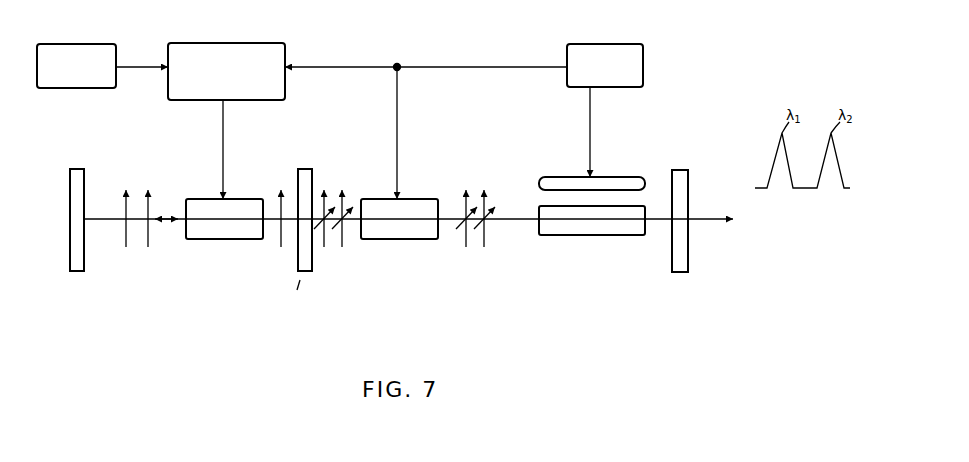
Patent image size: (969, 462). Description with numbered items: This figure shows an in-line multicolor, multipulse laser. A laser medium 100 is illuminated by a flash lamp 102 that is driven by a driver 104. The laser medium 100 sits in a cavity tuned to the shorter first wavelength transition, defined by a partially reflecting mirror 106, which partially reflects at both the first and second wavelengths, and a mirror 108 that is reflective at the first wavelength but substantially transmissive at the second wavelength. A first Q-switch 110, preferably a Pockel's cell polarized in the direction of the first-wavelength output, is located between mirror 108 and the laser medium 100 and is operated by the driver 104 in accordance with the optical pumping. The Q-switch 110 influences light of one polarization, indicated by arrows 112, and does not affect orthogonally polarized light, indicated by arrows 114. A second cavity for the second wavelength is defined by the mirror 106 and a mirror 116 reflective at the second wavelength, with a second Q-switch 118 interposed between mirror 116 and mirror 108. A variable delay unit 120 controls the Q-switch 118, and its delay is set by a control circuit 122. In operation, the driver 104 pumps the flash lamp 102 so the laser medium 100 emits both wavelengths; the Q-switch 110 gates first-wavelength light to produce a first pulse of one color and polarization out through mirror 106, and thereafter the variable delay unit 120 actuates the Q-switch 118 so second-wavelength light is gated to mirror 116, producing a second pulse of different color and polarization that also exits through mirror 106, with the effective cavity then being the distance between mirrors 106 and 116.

The laser medium 100 is at (560, 235).
The flash lamp 102 is at (613, 172).
The driver 104 is at (605, 110).
The partially reflecting mirror 106 is at (695, 268).
The mirror 108 is at (300, 169).
The first Q-switch 110 is at (375, 239).
The arrows 112 is at (335, 198).
The arrows 114 is at (344, 193).
The mirror 116 is at (87, 270).
The second Q-switch 118 is at (196, 239).
The variable delay unit 120 is at (275, 42).
The control circuit 122 is at (103, 42).